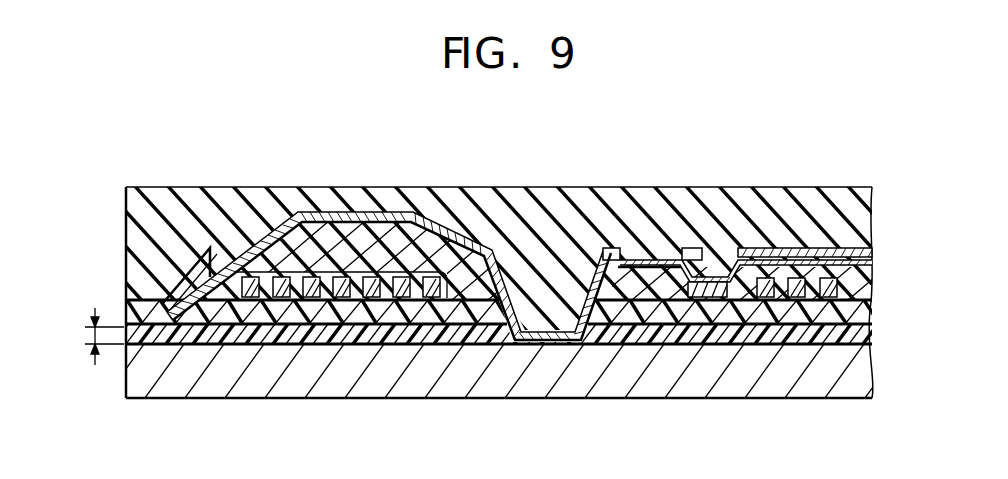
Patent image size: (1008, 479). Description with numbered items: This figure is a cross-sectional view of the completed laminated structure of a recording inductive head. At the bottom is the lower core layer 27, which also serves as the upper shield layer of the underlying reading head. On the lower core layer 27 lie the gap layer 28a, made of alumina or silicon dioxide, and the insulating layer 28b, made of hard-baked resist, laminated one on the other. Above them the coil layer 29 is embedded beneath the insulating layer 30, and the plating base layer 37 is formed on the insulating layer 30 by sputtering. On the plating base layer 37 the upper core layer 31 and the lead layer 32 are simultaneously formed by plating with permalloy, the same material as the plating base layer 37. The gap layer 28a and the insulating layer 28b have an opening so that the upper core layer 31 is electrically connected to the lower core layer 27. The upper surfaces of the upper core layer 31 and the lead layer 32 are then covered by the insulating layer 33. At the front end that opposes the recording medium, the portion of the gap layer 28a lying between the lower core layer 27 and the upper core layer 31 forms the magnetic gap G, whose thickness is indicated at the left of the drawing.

The lower core layer 27 is at (540, 372).
The gap layer 28a is at (292, 335).
The insulating layer 28b is at (412, 312).
The coil layer 29 is at (343, 275).
The insulating layer 30 is at (407, 252).
The upper core layer 31 is at (483, 237).
The lead layer 32 is at (688, 247).
The insulating layer 33 is at (558, 238).
The plating base layer 37 is at (445, 232).
The magnetic gap G is at (95, 336).